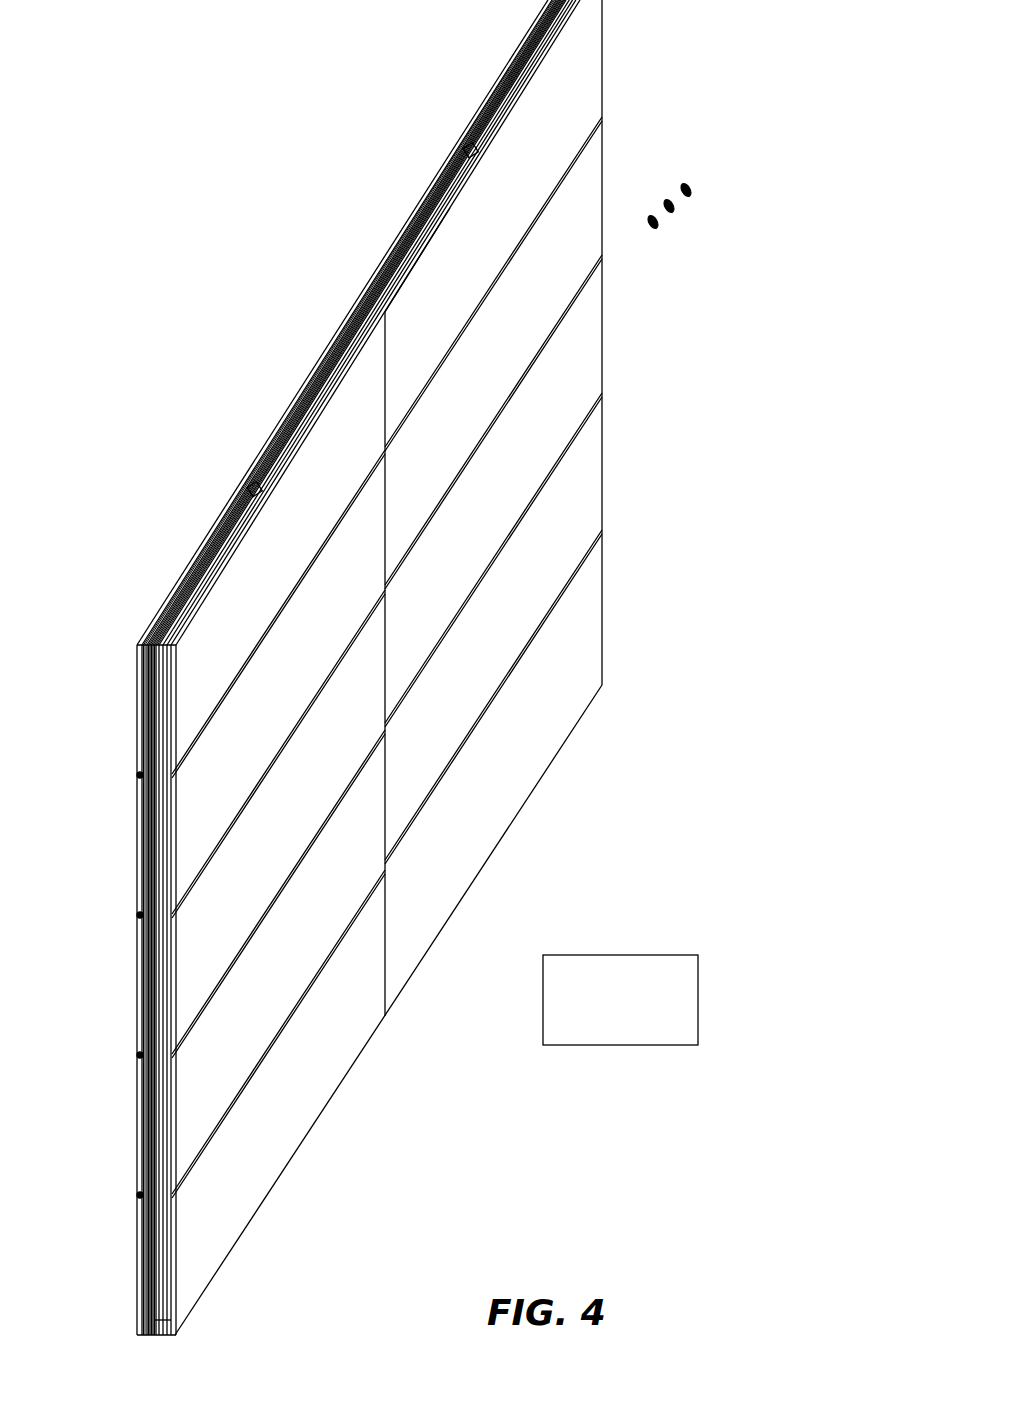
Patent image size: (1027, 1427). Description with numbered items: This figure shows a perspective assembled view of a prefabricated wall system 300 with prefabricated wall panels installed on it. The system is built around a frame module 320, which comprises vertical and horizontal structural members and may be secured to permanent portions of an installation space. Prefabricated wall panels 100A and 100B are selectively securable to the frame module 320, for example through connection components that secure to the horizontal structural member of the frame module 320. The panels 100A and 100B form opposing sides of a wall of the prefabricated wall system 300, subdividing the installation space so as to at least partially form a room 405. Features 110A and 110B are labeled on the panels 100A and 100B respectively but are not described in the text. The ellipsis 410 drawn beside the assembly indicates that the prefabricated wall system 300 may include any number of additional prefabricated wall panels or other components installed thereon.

The prefabricated wall system 300 is at (163, 336).
The frame module 320 is at (154, 1308).
The prefabricated wall panel 100A is at (466, 667).
The prefabricated wall panel 100B is at (311, 652).
The slat of first panel 110A is at (584, 121).
The slat of second panel 110B is at (407, 279).
The ellipsis 410 is at (680, 222).
The room 405 is at (638, 1012).